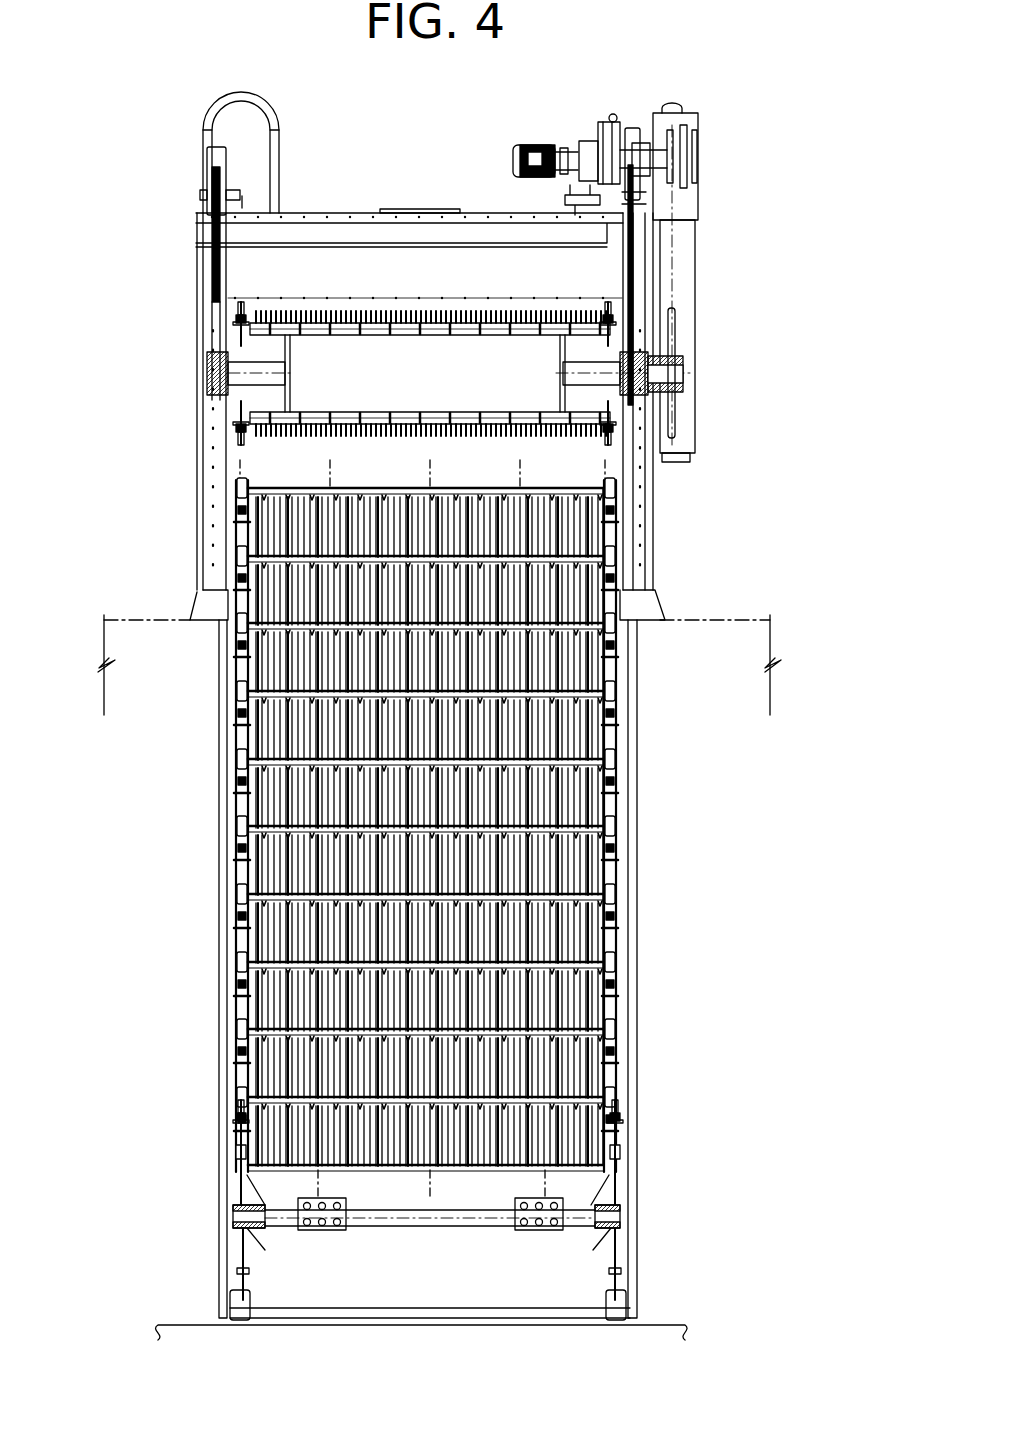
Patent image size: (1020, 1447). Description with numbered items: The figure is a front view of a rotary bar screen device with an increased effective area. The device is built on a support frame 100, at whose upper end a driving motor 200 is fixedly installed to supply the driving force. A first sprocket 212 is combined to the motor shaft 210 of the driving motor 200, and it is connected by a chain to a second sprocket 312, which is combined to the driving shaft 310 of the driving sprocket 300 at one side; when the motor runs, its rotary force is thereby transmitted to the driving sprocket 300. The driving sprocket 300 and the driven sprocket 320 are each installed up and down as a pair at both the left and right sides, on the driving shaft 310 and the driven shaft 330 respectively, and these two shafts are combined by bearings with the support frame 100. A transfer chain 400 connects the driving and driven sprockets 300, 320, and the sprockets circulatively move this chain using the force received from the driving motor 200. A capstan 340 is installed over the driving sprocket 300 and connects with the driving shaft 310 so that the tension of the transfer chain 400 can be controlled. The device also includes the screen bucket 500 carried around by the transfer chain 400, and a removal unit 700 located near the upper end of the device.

The support frame 100 is at (198, 495).
The driving motor 200 is at (548, 142).
The motor shaft 210 is at (682, 160).
The first sprocket 212 is at (676, 127).
The driving sprocket 300 is at (240, 312).
The driving shaft 310 is at (212, 375).
The second sprocket 312 is at (676, 343).
The driven sprocket 320 is at (240, 1152).
The driven shaft 330 is at (248, 1216).
The capstan 340 is at (205, 180).
The transfer chain 400 is at (240, 925).
The screen bucket 500 is at (249, 794).
The removal unit 700 is at (445, 306).